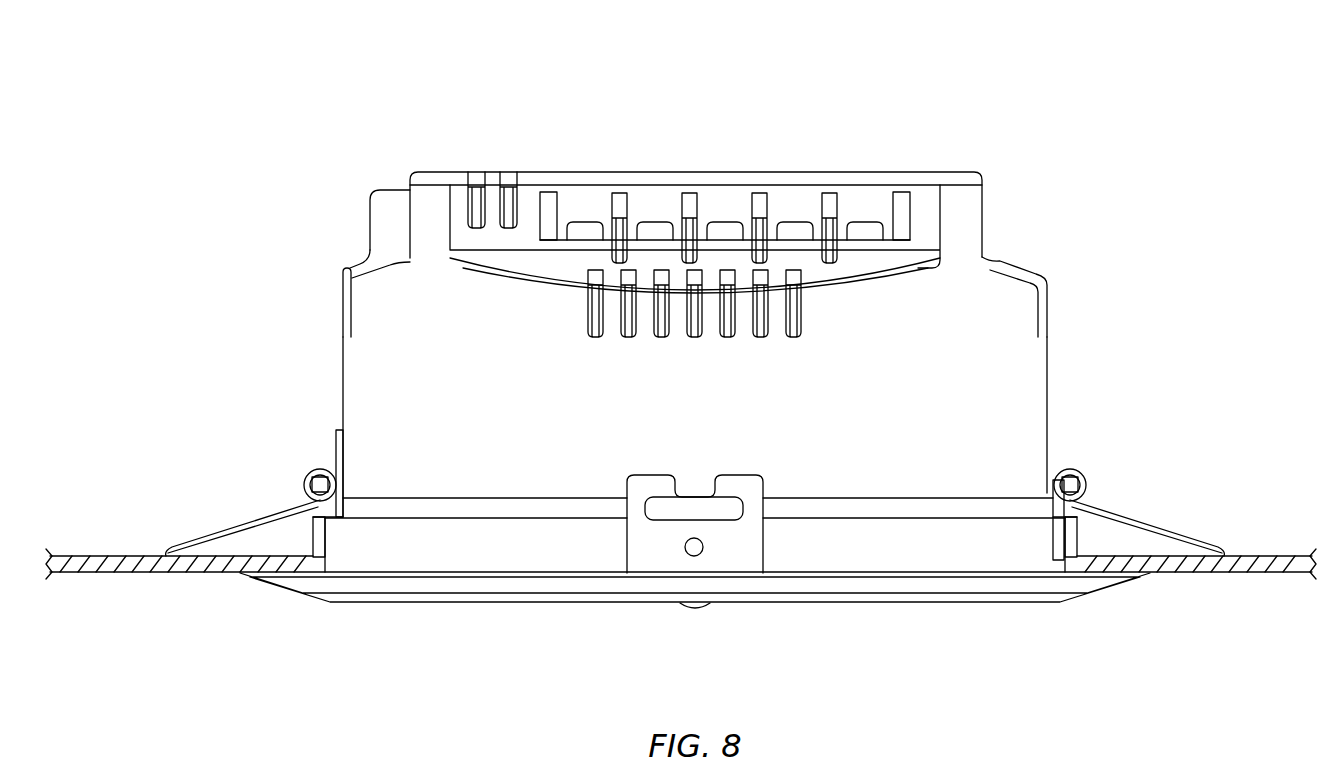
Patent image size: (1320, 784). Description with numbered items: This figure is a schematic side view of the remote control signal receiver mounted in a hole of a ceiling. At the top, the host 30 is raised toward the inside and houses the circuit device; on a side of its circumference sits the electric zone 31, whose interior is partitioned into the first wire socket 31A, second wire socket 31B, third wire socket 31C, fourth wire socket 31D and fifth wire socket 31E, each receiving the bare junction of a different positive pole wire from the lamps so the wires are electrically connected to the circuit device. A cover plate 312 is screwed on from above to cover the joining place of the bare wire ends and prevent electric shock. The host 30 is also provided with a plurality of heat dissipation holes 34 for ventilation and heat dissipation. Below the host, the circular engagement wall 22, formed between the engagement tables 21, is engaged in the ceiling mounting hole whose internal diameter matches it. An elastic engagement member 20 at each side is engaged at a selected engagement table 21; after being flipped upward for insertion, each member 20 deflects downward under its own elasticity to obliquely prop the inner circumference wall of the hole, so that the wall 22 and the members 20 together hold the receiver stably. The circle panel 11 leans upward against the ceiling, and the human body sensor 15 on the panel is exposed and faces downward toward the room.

The circle panel 11 is at (455, 592).
The human body sensor 15 is at (695, 607).
The elastic engagement member 20 is at (243, 527).
The engagement table 21 is at (320, 487).
The circular engagement wall 22 is at (968, 558).
The host 30 is at (1005, 327).
The electric zone 31 is at (843, 155).
The cover plate 312 is at (828, 178).
The first wire socket 31A is at (872, 205).
The second wire socket 31B is at (792, 205).
The third wire socket 31C is at (720, 205).
The fourth wire socket 31D is at (645, 205).
The fifth wire socket 31E is at (577, 205).
The heat dissipation hole 34 is at (476, 200).